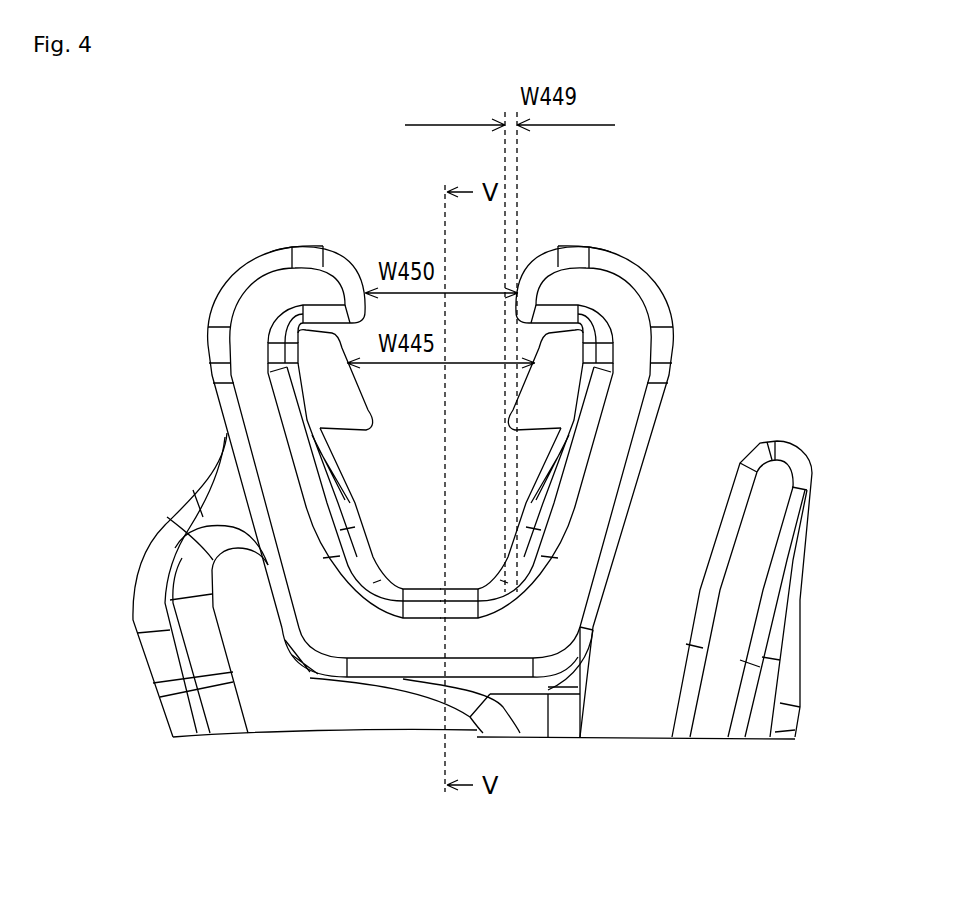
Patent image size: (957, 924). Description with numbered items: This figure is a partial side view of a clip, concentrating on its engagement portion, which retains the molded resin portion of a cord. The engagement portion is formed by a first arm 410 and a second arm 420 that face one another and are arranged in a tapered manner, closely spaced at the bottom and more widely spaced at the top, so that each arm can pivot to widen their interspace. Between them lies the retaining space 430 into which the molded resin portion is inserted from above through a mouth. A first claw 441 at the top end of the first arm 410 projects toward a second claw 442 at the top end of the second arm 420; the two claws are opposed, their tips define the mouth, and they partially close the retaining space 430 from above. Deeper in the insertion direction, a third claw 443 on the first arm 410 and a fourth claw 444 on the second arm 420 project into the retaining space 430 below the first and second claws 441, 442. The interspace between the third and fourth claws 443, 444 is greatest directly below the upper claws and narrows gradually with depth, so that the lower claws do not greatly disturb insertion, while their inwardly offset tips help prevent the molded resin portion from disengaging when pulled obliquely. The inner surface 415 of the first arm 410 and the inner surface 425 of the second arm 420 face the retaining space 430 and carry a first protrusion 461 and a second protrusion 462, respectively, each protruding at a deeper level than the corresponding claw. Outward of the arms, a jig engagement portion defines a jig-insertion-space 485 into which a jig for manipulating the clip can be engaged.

The first arm 410 is at (248, 312).
The inner surface of the first arm 415 is at (315, 355).
The second arm 420 is at (640, 325).
The inner surface of the second arm 425 is at (573, 413).
The retaining space 430 is at (418, 490).
The first claw 441 is at (322, 283).
The second claw 442 is at (565, 280).
The third claw 443 is at (330, 397).
The fourth claw 444 is at (657, 380).
The first protrusion 461 is at (352, 533).
The second protrusion 462 is at (527, 512).
The jig-insertion-space 485 is at (645, 696).